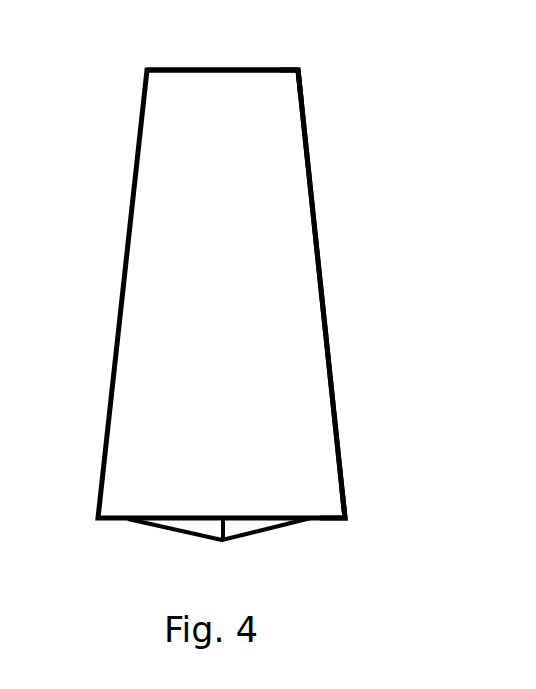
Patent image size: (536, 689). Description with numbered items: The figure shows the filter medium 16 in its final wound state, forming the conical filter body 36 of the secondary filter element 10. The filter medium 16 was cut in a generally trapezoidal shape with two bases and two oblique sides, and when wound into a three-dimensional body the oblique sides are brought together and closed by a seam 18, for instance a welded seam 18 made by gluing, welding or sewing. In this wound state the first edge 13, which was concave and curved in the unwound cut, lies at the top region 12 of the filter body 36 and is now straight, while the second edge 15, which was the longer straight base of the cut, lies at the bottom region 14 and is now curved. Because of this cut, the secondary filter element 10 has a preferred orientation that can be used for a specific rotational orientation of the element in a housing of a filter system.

The secondary filter element 10 is at (325, 252).
The top region 12 is at (314, 77).
The first edge 13 is at (192, 76).
The bottom region 14 is at (358, 492).
The second edge 15 is at (194, 537).
The filter medium 16 is at (230, 282).
The seam 18 is at (228, 535).
The filter body 36 is at (311, 163).